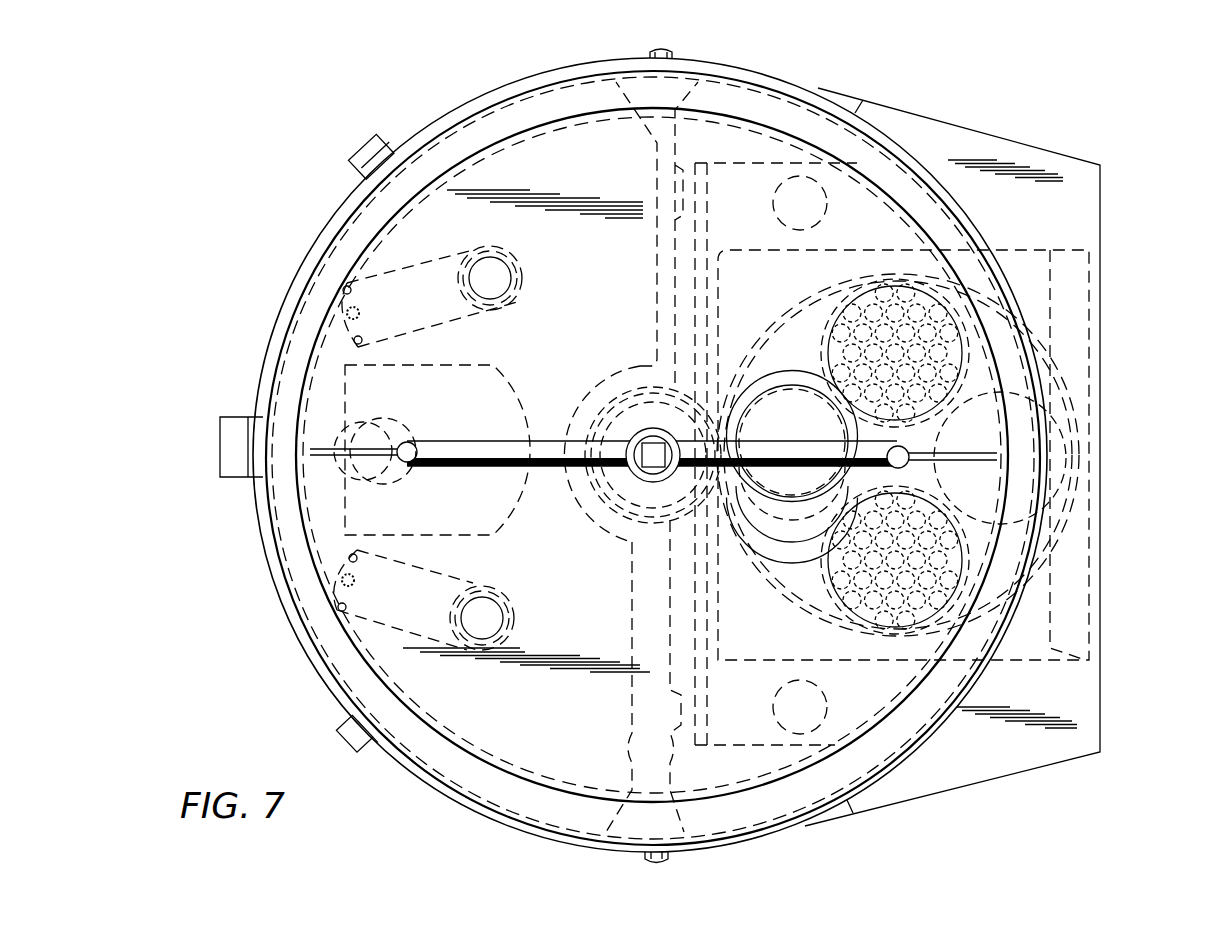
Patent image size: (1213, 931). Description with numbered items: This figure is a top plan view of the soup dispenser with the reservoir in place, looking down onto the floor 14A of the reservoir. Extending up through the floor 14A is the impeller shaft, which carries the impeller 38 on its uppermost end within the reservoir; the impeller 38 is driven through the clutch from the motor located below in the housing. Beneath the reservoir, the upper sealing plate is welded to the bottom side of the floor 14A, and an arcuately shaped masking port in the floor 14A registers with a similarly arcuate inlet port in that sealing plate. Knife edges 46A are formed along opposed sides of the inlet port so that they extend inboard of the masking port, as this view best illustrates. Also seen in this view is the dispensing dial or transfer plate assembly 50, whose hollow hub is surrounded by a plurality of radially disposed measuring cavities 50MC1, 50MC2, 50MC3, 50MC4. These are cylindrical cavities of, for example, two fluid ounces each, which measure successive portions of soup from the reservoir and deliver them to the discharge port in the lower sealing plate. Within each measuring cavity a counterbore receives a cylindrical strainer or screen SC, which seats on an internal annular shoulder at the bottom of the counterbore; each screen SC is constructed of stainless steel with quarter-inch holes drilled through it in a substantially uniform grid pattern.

The floor of the reservoir 14A is at (610, 284).
The impeller 38 is at (458, 447).
The knife edges 46A is at (812, 345).
The dispensing dial or transfer plate assembly 50 is at (1058, 523).
The measuring cavity 50MC1 is at (828, 504).
The measuring cavity 50MC2 is at (933, 287).
The measuring cavity 50MC3 is at (1062, 460).
The measuring cavity 50MC4 is at (866, 626).
The strainer or screen SC is at (912, 324).